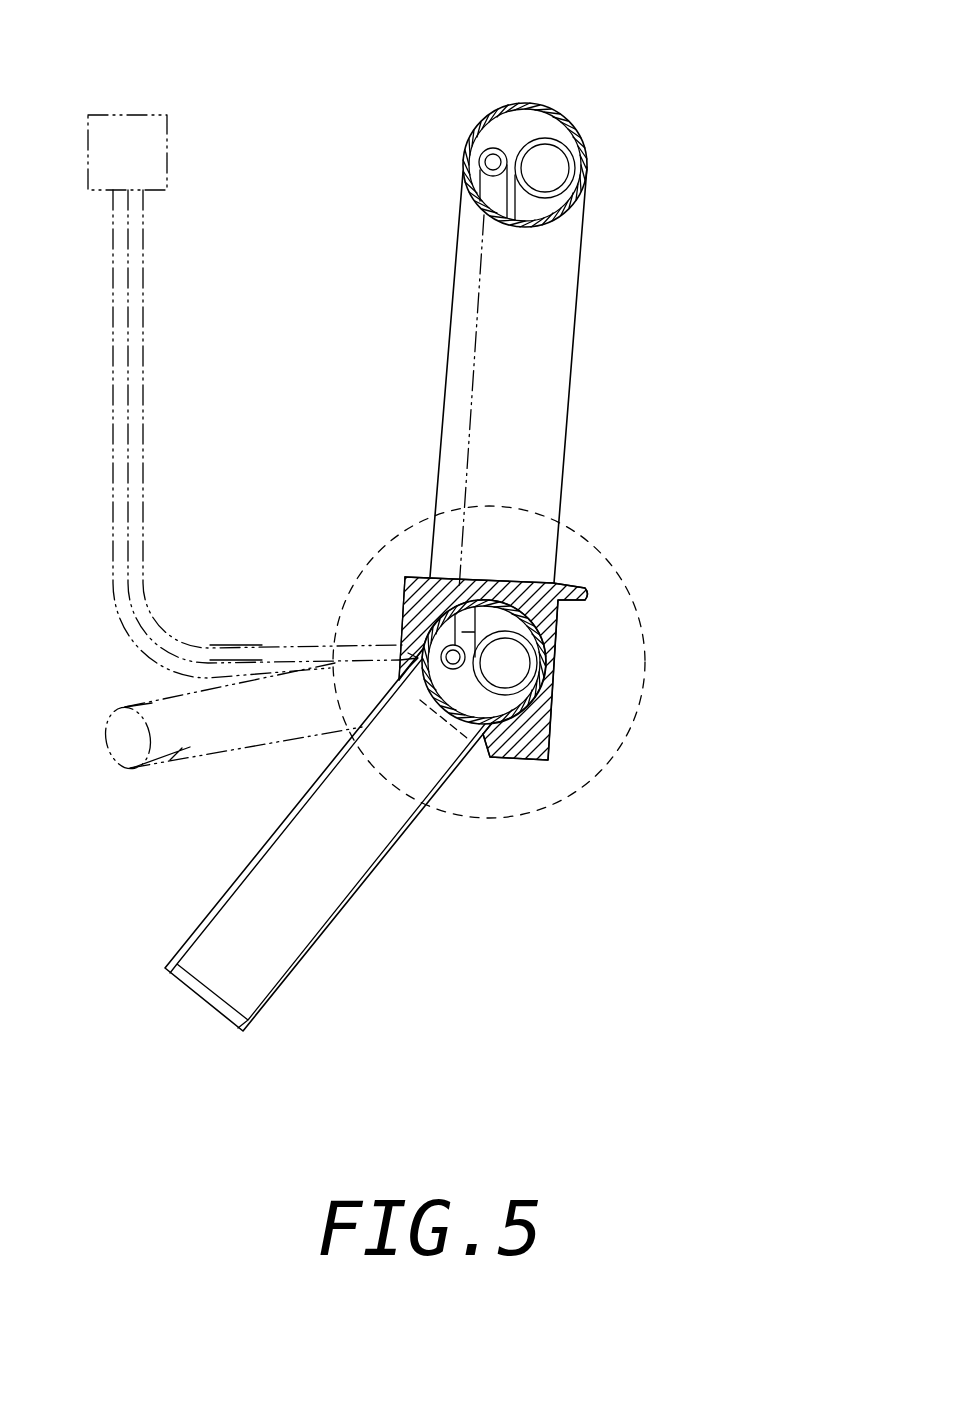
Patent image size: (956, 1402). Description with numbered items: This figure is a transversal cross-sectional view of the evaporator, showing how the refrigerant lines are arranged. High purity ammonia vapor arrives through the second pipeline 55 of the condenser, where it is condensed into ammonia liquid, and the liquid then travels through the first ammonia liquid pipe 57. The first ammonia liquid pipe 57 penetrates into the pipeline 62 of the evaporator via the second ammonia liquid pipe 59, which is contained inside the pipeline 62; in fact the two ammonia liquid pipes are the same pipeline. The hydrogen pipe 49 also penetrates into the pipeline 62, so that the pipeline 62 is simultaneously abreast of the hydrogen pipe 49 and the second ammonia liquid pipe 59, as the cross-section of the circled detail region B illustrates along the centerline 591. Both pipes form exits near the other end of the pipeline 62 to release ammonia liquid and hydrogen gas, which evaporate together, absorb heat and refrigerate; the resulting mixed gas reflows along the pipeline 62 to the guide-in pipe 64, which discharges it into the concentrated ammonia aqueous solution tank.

The hydrogen pipe 49 is at (160, 775).
The second pipeline of condenser 55 is at (150, 115).
The first ammonia liquid pipe 57 is at (157, 613).
The second ammonia liquid pipe 59 is at (483, 182).
The pipeline of evaporator 62 is at (458, 333).
The guide-in pipe 64 is at (295, 915).
The centerline 591 is at (470, 450).
The detail region B is at (620, 737).